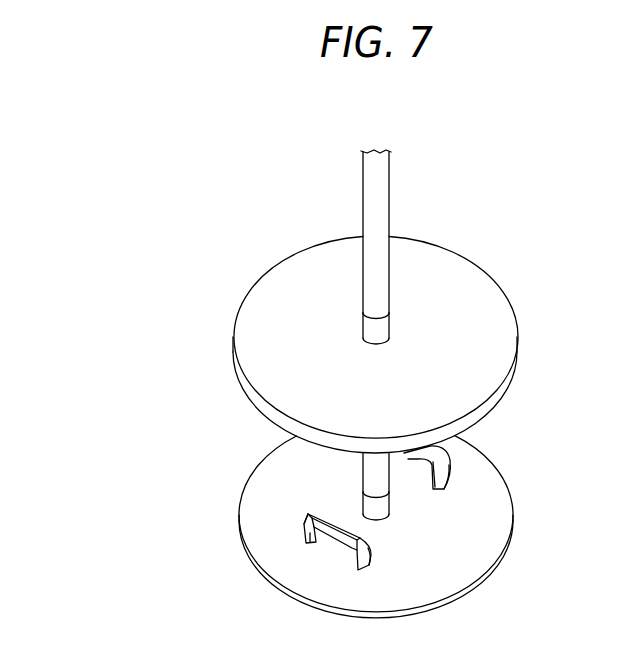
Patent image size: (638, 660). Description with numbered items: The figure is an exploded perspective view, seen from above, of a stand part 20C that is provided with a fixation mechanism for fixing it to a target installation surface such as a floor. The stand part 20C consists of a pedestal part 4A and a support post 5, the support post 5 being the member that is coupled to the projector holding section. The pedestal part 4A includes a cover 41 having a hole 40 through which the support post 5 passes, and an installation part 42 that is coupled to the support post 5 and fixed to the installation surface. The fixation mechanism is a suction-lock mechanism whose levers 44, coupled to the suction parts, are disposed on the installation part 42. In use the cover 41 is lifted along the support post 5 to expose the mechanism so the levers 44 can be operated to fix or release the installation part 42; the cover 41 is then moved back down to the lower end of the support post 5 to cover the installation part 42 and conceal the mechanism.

The support post 5 is at (363, 192).
The stand part 20C is at (92, 312).
The pedestal part 4A is at (198, 435).
The hole 40 is at (386, 338).
The cover 41 is at (502, 323).
The installation part 42 is at (502, 525).
The lever 44 is at (447, 448).